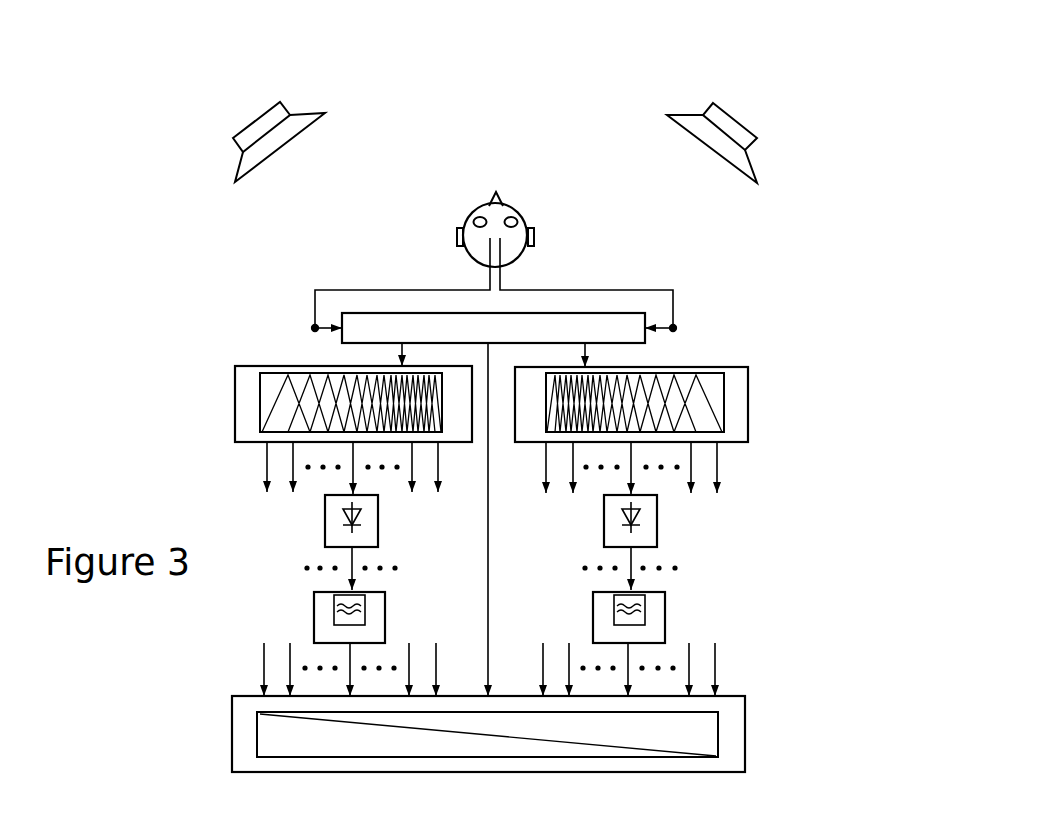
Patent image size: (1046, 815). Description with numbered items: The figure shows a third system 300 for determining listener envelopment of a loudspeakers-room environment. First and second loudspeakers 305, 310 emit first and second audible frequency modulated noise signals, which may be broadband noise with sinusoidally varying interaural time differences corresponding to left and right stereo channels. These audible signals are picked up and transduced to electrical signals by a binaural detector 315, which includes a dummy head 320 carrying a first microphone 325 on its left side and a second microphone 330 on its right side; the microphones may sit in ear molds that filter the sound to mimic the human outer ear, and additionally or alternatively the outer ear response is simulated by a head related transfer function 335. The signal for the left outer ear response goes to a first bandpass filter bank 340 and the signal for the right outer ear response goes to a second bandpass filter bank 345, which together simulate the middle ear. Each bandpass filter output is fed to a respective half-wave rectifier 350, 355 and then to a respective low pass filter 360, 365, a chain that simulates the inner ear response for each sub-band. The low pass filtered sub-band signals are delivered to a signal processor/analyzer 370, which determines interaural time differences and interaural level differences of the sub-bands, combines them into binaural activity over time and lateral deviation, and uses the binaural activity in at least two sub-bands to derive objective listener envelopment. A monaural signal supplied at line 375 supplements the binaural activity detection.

The third system 300 is at (582, 130).
The first loudspeaker 305 is at (252, 124).
The second loudspeaker 310 is at (745, 119).
The binaural detector 315 is at (440, 203).
The dummy head 320 is at (507, 205).
The first microphone 325 is at (455, 240).
The second microphone 330 is at (537, 242).
The head related transfer function 335 is at (602, 327).
The first bandpass filter bank 340 is at (470, 443).
The second bandpass filter bank 345 is at (748, 443).
The half-wave rectifier 350 is at (380, 522).
The half-wave rectifier 355 is at (602, 523).
The low pass filter 360 is at (387, 602).
The low pass filter 365 is at (592, 602).
The signal processor/analyzer 370 is at (730, 773).
The line 375 is at (487, 594).